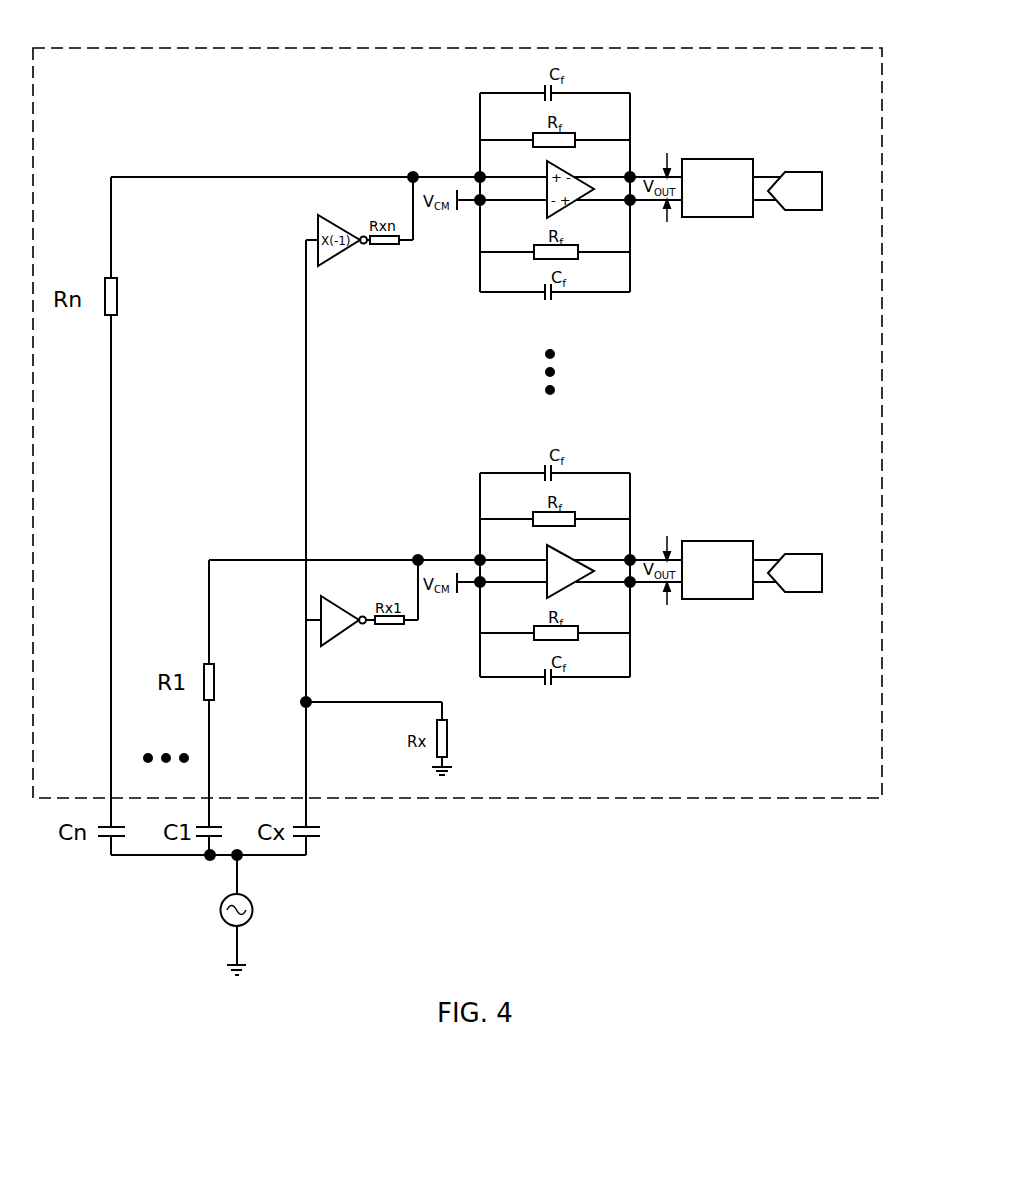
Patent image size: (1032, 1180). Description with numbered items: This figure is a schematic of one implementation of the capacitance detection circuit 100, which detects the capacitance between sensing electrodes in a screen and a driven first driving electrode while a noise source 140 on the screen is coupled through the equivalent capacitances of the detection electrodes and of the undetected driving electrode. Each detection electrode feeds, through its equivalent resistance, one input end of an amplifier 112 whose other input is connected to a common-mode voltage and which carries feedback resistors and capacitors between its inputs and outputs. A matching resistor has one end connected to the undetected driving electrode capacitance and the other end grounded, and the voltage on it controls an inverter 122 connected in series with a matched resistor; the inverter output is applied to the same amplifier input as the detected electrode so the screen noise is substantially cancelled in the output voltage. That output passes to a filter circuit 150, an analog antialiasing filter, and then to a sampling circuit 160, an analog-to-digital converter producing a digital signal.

The capacitance detection circuit 100 is at (832, 48).
The amplifier 112 is at (567, 547).
The inverter 122 is at (348, 602).
The noise source 140 is at (252, 906).
The filter circuit 150 is at (713, 158).
The sampling circuit 160 is at (794, 172).